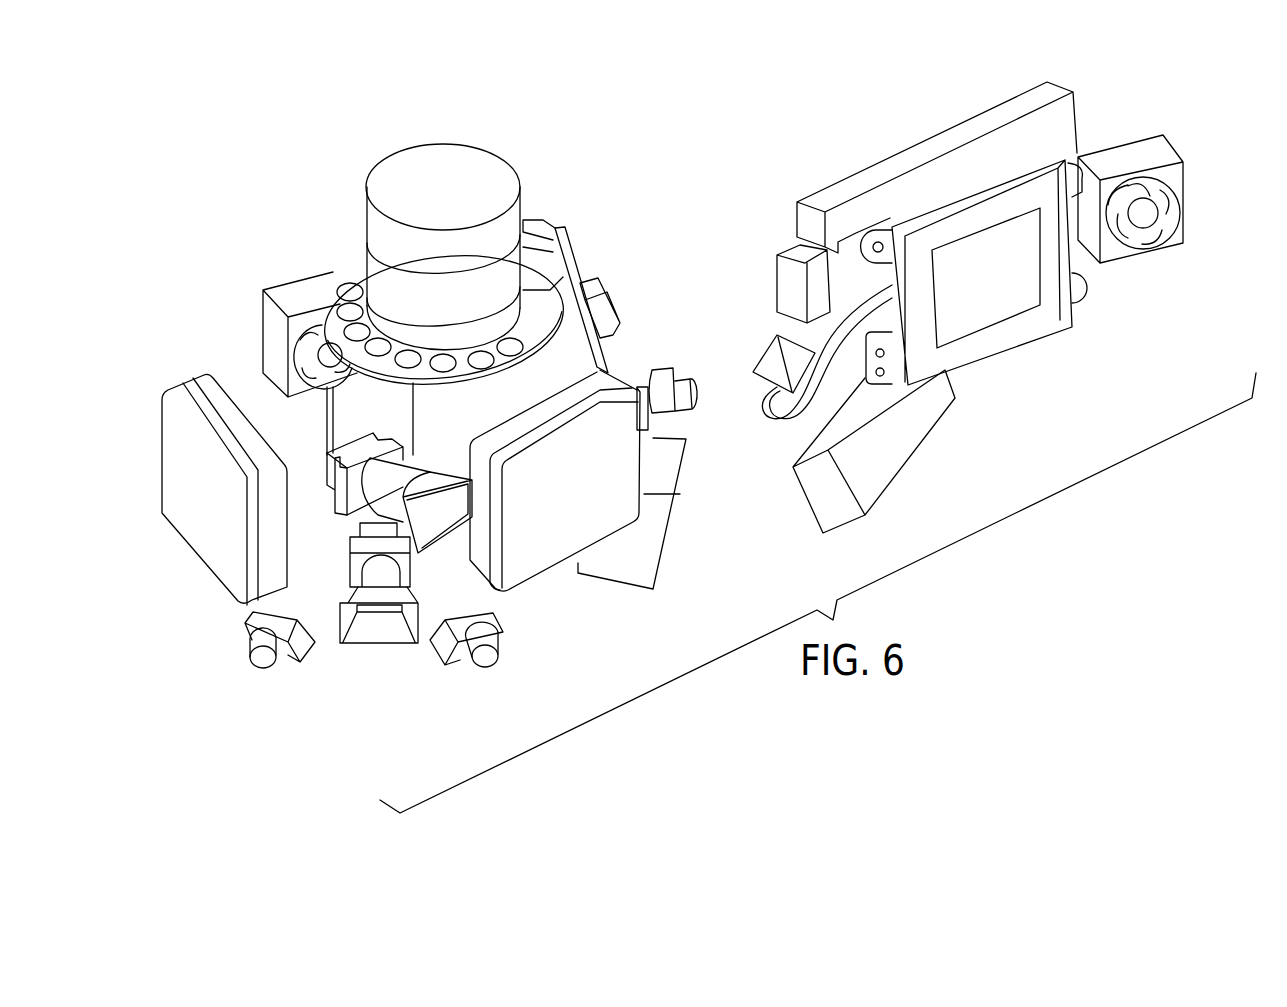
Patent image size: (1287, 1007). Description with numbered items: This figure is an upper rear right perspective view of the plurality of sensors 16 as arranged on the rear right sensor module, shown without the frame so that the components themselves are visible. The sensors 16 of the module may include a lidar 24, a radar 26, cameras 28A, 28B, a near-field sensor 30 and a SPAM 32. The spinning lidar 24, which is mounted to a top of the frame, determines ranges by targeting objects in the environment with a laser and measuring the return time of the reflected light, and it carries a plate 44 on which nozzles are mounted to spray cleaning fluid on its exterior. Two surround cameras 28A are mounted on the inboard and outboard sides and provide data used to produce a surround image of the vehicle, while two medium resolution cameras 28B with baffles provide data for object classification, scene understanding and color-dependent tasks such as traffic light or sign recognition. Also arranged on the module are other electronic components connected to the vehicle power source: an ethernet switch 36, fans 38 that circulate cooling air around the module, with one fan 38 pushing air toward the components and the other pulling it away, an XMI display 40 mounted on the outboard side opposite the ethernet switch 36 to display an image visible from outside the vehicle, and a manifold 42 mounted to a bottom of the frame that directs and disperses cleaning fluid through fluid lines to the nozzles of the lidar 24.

The sensors 16 is at (426, 436).
The lidar 24 is at (485, 180).
The radar 26 is at (207, 550).
The surround cameras 28A is at (258, 662).
The medium resolution cameras 28B is at (393, 645).
The near-field sensor 30 is at (300, 508).
The SPAM 32 is at (543, 230).
The ethernet switch 36 is at (930, 148).
The fan 38 is at (305, 290).
The XMI display 40 is at (1005, 305).
The manifold 42 is at (915, 430).
The plate 44 is at (547, 300).